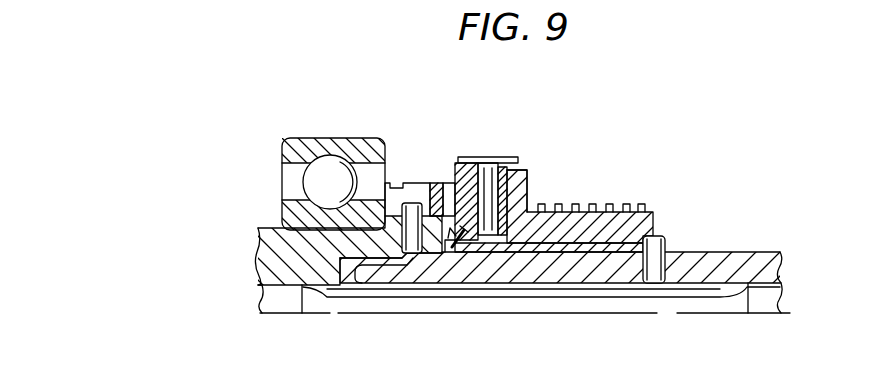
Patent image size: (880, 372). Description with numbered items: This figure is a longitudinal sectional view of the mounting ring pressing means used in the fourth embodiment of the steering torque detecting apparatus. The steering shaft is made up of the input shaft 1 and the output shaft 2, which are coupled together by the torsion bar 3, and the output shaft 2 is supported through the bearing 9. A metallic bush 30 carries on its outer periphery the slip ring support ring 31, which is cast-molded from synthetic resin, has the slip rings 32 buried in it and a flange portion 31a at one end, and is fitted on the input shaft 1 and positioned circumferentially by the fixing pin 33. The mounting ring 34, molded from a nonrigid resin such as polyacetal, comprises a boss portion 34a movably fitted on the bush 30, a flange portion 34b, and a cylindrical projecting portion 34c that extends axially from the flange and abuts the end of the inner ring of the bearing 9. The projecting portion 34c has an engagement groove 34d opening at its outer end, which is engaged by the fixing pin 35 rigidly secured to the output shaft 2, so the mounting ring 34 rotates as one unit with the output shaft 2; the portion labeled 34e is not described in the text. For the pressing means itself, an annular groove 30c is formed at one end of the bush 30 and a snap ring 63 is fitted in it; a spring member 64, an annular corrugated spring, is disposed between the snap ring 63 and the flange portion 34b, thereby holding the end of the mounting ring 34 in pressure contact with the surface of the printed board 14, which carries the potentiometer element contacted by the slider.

The input shaft 1 is at (733, 252).
The output shaft 2 is at (282, 228).
The torsion bar 3 is at (697, 300).
The bearing 9 is at (282, 152).
The printed board 14 is at (505, 158).
The bush 30 is at (556, 243).
The annular groove 30c is at (452, 246).
The slip ring support ring 31 is at (645, 212).
The flange portion 31a is at (527, 180).
The slip rings 32 is at (607, 206).
The fixing pin 33 is at (662, 237).
The mounting ring 34 is at (565, 100).
The boss portion 34a is at (480, 160).
The flange portion 34b is at (463, 180).
The cylindrical projecting portion 34c is at (434, 184).
The engagement groove 34d is at (408, 184).
The spacer member 34e is at (441, 184).
The fixing pin 35 is at (393, 205).
The snap ring 63 is at (451, 232).
The spring member 64 is at (462, 250).